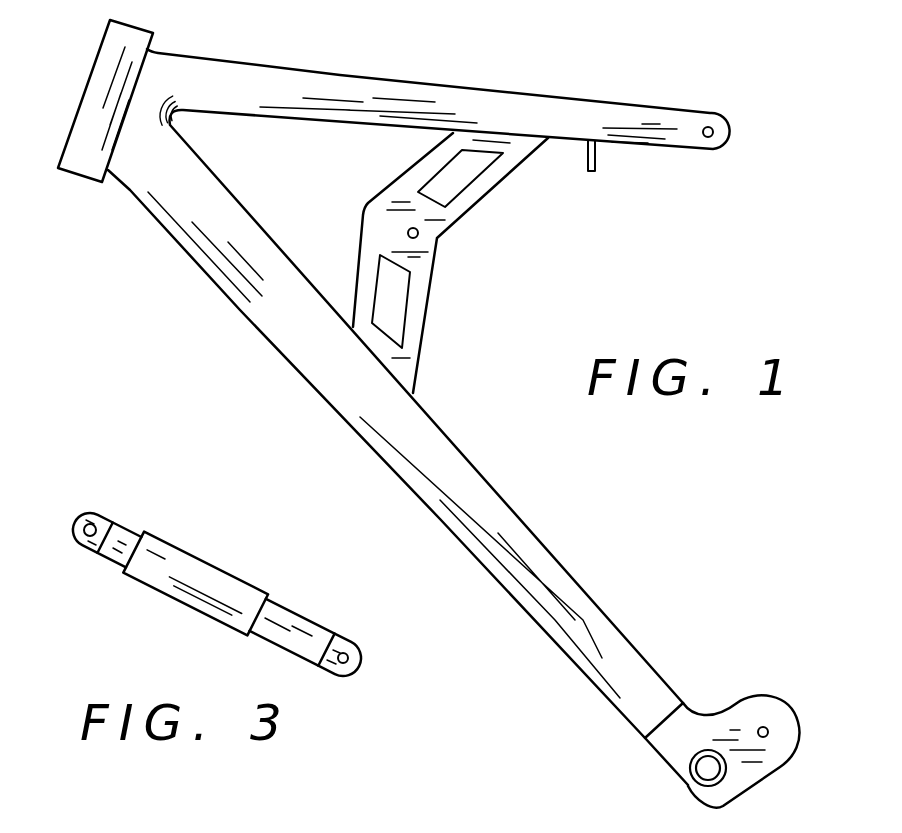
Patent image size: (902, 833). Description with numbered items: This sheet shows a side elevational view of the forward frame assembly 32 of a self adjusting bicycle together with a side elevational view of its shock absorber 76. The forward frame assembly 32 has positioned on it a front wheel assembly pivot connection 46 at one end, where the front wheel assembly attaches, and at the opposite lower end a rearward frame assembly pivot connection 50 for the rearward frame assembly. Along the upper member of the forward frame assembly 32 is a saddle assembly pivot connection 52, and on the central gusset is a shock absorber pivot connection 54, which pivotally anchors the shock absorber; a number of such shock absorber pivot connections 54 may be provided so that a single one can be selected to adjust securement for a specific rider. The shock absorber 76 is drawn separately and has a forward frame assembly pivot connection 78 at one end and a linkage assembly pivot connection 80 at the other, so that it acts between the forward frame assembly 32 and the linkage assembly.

In FIG. 1, the forward frame assembly 32 is at (208, 397).
In FIG. 1, the front wheel assembly pivot connection 46 is at (79, 182).
In FIG. 1, the rearward frame assembly pivot connection 50 is at (767, 727).
In FIG. 1, the saddle assembly pivot connection 52 is at (713, 140).
In FIG. 1, the shock absorber pivot connection 54 is at (419, 234).
In FIG. 3, the shock absorber 76 is at (137, 642).
In FIG. 3, the forward frame assembly pivot connection 78 is at (93, 524).
In FIG. 3, the linkage assembly pivot connection 80 is at (348, 655).